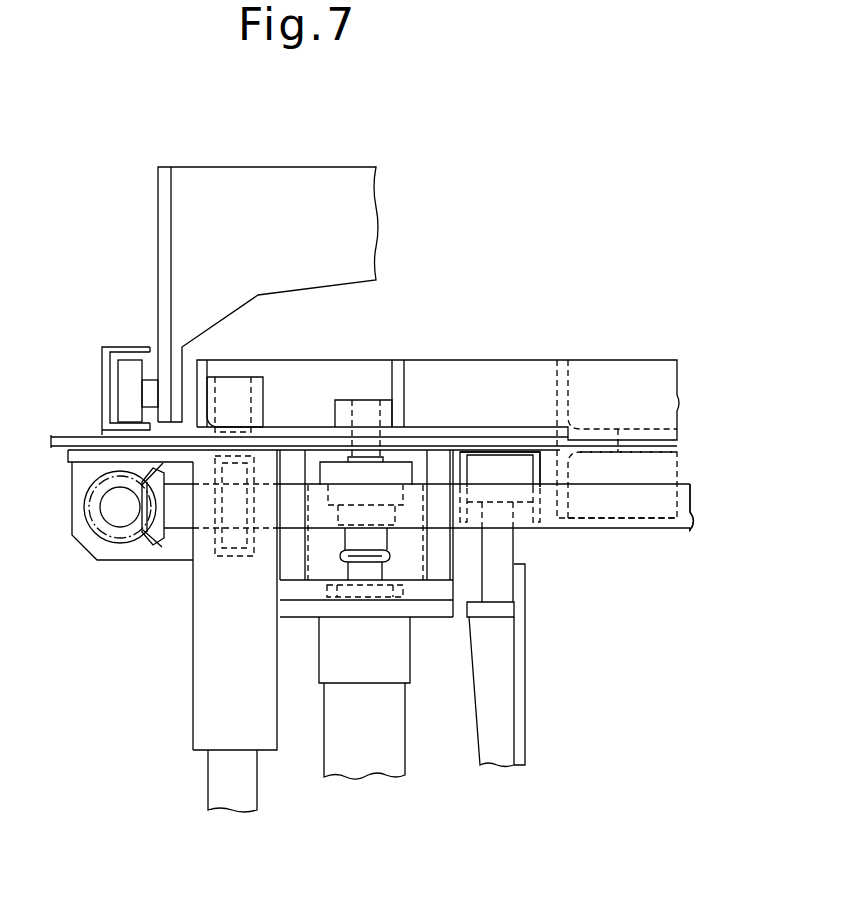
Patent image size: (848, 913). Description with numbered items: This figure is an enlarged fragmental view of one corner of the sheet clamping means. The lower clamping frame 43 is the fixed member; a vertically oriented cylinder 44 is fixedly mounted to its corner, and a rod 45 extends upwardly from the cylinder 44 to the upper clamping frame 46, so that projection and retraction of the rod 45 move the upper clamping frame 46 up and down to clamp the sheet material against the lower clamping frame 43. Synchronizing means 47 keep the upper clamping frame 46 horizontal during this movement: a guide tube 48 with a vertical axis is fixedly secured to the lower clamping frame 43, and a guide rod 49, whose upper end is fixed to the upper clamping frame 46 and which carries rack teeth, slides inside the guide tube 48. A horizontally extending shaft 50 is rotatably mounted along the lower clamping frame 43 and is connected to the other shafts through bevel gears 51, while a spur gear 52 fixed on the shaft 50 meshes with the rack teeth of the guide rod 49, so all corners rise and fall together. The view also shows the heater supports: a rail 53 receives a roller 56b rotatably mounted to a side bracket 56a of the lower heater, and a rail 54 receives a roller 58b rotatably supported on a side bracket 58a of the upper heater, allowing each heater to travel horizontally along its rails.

The lower clamping frame 43 is at (645, 470).
The cylinder 44 is at (405, 752).
The rod 45 is at (382, 573).
The upper clamping frame 46 is at (497, 360).
The synchronizing means 47 is at (174, 600).
The guide tube 48 is at (190, 640).
The guide rod 49 is at (208, 772).
The shaft 50 is at (117, 508).
The bevel gear 51 is at (85, 507).
The spur gear 52 is at (233, 557).
The rail 53 is at (540, 470).
The rail 54 is at (117, 347).
The side bracket 56a is at (525, 740).
The roller 56b is at (513, 470).
The side bracket 58a is at (275, 167).
The roller 58b is at (130, 385).